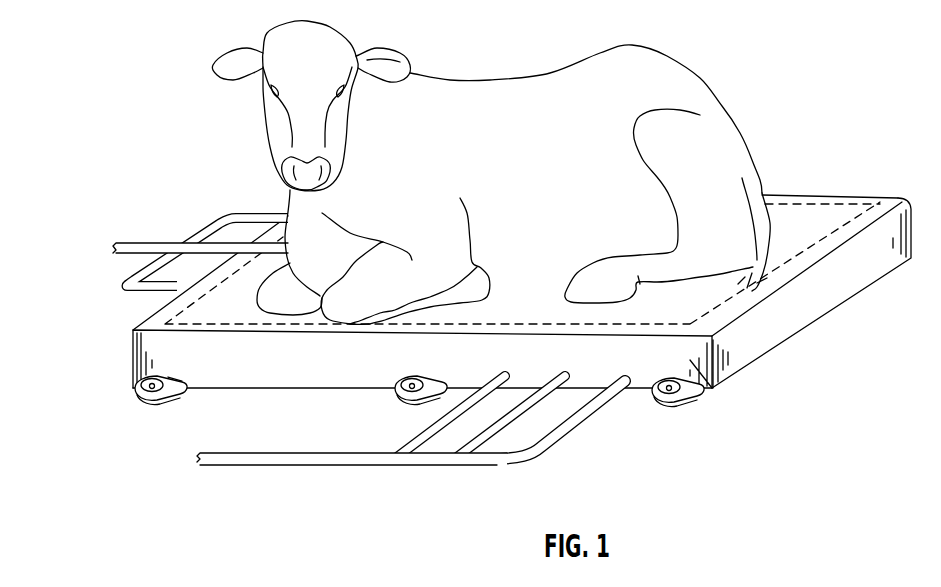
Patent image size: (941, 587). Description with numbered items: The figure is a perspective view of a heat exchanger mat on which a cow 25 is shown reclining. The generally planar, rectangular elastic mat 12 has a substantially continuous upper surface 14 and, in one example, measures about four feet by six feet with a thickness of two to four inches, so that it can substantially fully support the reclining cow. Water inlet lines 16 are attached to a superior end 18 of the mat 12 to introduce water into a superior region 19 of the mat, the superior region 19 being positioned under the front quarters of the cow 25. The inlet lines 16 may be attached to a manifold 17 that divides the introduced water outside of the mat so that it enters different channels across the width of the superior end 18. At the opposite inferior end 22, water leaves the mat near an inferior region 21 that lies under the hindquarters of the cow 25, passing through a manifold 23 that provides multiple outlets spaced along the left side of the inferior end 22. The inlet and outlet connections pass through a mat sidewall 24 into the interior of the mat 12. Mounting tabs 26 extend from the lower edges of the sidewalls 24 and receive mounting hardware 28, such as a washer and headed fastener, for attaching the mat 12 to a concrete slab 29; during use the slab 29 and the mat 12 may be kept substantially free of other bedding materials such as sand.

The elastic mat 12 is at (738, 328).
The upper surface 14 is at (887, 207).
The water inlet lines 16 is at (153, 243).
The manifold 17 is at (221, 213).
The superior end 18 is at (186, 119).
The superior region 19 is at (177, 318).
The inferior region 21 is at (763, 280).
The inferior end 22 is at (877, 112).
The manifold 23 is at (462, 458).
The mat sidewall 24 is at (132, 352).
The cow 25 is at (432, 93).
The mounting tabs 26 is at (143, 403).
The mounting hardware 28 is at (185, 390).
The concrete slab 29 is at (252, 407).